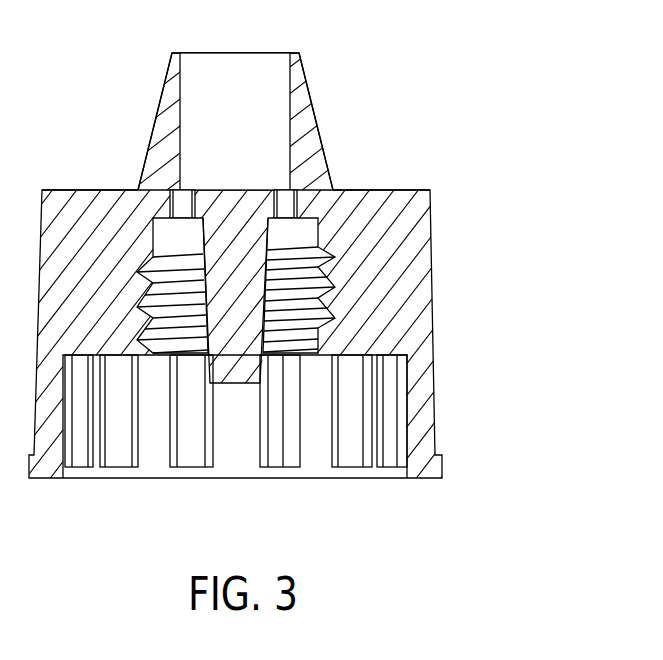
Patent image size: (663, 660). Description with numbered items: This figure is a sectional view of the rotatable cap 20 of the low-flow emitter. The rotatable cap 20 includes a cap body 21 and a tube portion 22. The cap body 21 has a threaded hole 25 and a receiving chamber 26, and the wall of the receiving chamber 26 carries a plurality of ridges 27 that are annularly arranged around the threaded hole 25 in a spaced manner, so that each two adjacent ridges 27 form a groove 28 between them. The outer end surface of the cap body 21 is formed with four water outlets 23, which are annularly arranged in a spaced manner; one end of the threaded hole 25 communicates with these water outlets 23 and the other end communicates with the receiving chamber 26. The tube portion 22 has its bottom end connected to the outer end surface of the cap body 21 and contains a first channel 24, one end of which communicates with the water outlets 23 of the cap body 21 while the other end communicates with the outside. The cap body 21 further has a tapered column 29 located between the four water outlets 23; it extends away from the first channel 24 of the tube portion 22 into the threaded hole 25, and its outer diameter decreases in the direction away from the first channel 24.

The rotatable cap 20 is at (331, 273).
The cap body 21 is at (418, 218).
The tube portion 22 is at (302, 108).
The water outlets 23 is at (285, 202).
The first channel 24 is at (225, 83).
The threaded hole 25 is at (320, 286).
The receiving chamber 26 is at (296, 451).
The ridges 27 is at (115, 442).
The groove 28 is at (153, 443).
The tapered column 29 is at (232, 385).